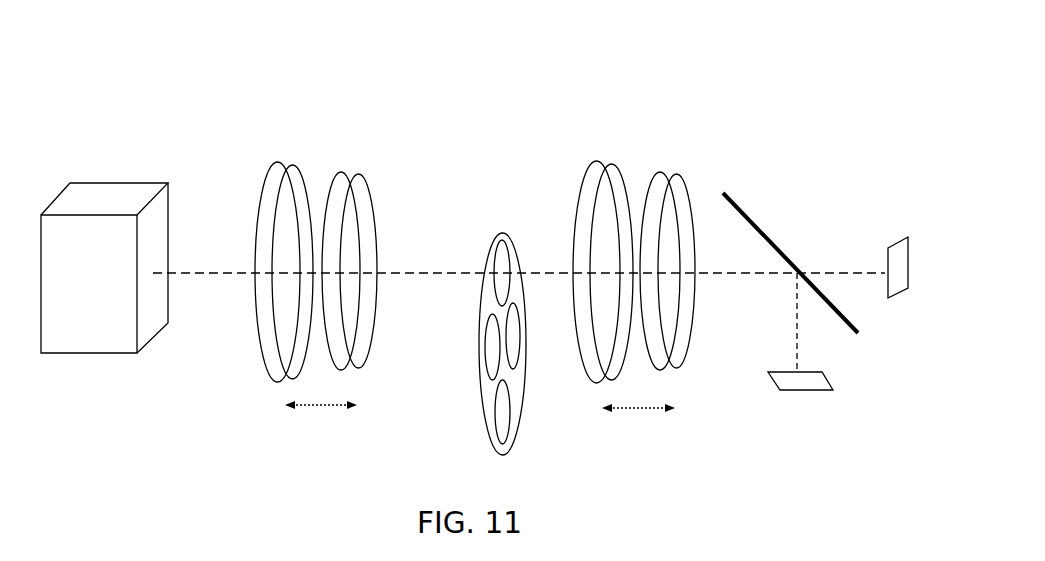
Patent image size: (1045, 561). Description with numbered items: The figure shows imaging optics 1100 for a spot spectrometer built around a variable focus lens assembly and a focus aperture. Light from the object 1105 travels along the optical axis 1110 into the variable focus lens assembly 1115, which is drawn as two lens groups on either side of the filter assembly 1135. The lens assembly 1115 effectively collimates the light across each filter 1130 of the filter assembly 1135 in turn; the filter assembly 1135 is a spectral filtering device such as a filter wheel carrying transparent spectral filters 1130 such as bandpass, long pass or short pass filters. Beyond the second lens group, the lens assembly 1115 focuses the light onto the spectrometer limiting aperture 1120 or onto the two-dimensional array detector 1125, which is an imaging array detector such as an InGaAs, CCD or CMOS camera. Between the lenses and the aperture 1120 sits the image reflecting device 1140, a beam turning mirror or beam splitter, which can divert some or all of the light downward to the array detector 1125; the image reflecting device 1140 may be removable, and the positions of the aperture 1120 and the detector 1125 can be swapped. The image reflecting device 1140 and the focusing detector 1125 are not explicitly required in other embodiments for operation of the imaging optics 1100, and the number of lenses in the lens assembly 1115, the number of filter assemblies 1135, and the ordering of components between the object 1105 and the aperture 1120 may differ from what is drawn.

The imaging optics 1100 is at (876, 72).
The object 1105 is at (92, 355).
The optical axis / light beam 1110 is at (203, 270).
The variable focus lens assembly 1115 is at (630, 155).
The spectrometer limiting aperture 1120 is at (900, 292).
The 2-D array detector 1125 is at (807, 391).
The filter 1130 is at (500, 262).
The filter assembly 1135 is at (483, 408).
The image reflecting device 1140 is at (767, 233).